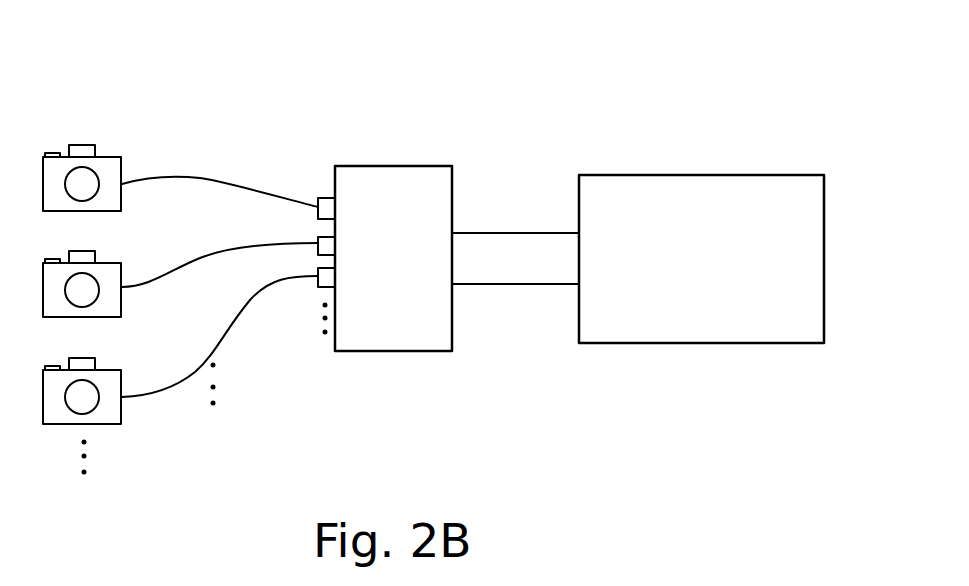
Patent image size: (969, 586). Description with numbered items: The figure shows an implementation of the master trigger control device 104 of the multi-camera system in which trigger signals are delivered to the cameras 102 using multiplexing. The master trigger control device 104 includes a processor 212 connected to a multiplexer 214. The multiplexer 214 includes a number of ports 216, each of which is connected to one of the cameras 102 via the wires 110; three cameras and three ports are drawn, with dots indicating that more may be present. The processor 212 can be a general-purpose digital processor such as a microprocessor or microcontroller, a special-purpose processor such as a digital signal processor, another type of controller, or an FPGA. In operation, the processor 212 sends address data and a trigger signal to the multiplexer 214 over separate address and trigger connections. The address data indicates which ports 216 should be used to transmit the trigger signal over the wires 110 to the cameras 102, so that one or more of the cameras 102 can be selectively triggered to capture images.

The master trigger control device 104 is at (678, 72).
The camera 102 is at (121, 160).
The wire 110 is at (208, 178).
The port 216 is at (320, 200).
The multiplexer 214 is at (452, 178).
The processor 212 is at (823, 203).